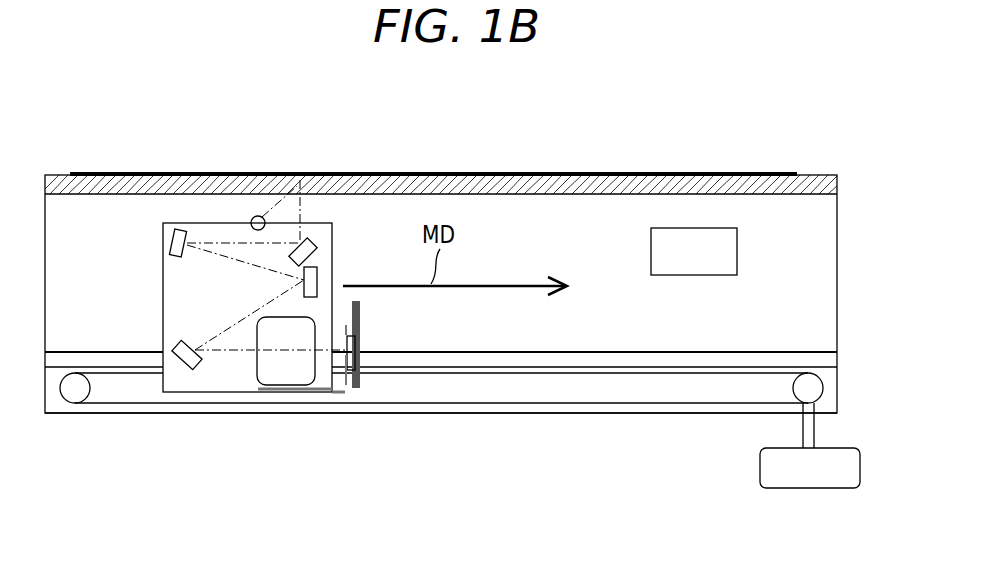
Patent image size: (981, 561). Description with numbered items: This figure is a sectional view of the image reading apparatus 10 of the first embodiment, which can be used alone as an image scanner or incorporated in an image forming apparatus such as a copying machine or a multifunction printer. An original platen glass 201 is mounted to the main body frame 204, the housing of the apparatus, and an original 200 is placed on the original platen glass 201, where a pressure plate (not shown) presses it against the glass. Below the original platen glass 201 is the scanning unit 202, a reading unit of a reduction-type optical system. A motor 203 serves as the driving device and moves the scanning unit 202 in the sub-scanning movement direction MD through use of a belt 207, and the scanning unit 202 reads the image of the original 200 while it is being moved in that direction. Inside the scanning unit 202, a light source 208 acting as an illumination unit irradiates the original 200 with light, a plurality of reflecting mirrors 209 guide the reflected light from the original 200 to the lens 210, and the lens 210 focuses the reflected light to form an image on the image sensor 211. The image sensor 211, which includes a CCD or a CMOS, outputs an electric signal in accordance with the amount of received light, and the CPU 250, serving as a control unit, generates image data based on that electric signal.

The image reading apparatus 10 is at (230, 147).
The original 200 is at (357, 173).
The original platen glass 201 is at (807, 185).
The scanning unit 202 is at (188, 393).
The motor 203 is at (760, 470).
The main body frame 204 is at (440, 413).
The belt 207 is at (565, 403).
The light source 208 is at (251, 217).
The reflecting mirrors 209 is at (170, 243).
The lens 210 is at (293, 374).
The image sensor 211 is at (352, 389).
The CPU 250 is at (738, 252).